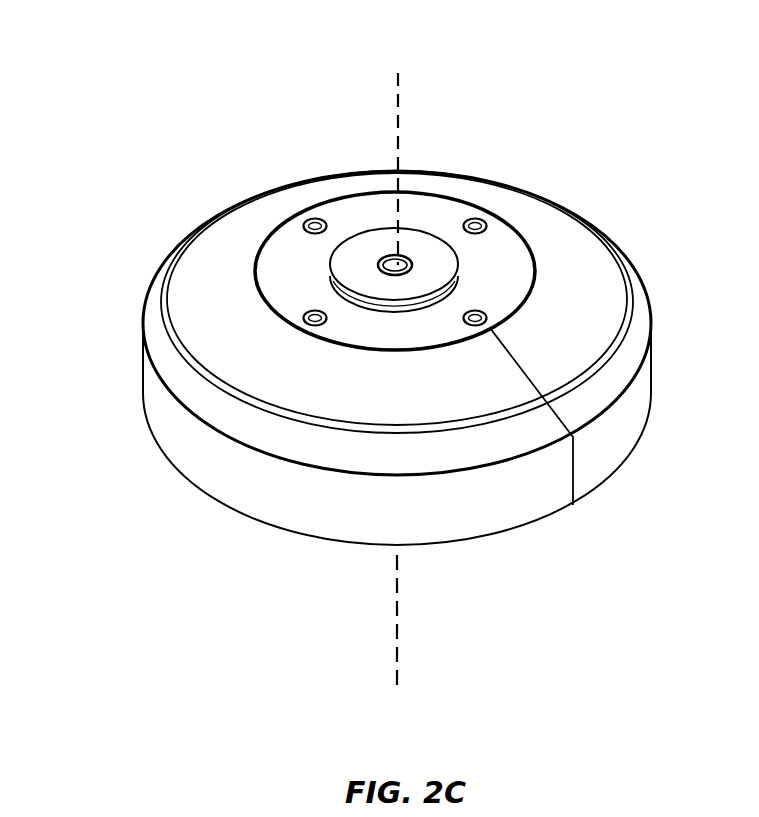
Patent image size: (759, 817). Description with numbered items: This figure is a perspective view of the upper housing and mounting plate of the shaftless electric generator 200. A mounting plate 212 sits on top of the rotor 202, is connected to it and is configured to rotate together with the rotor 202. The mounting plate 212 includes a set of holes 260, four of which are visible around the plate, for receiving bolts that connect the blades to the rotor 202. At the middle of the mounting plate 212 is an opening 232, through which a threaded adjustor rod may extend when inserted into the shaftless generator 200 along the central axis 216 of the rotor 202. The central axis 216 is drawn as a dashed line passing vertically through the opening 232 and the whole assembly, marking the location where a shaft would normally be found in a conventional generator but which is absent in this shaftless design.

The shaftless electric generator 200 is at (95, 50).
The rotor 202 is at (607, 248).
The mounting plate 212 is at (295, 259).
The central axis 216 is at (405, 354).
The opening 232 is at (382, 262).
The holes 260 is at (470, 325).